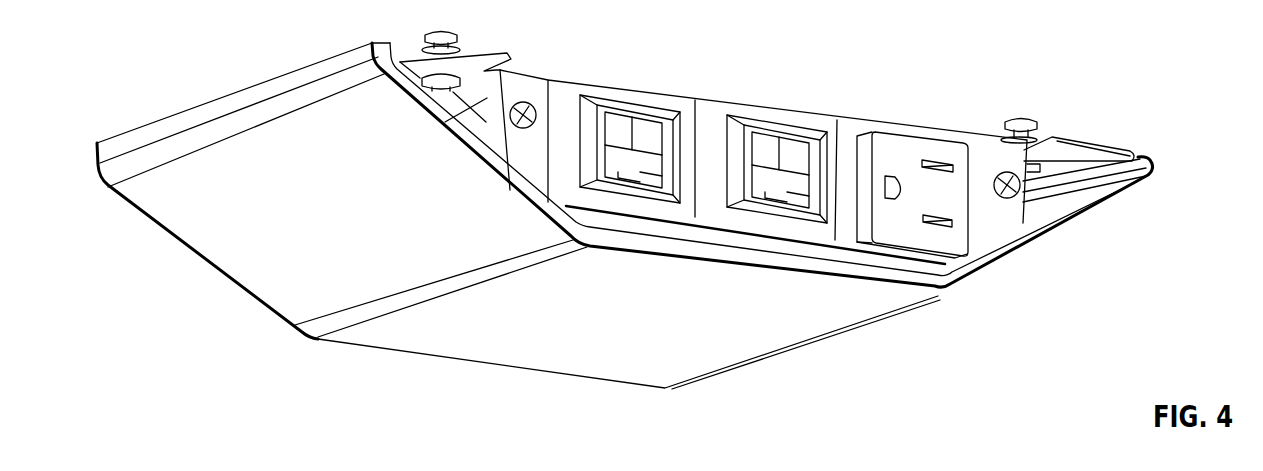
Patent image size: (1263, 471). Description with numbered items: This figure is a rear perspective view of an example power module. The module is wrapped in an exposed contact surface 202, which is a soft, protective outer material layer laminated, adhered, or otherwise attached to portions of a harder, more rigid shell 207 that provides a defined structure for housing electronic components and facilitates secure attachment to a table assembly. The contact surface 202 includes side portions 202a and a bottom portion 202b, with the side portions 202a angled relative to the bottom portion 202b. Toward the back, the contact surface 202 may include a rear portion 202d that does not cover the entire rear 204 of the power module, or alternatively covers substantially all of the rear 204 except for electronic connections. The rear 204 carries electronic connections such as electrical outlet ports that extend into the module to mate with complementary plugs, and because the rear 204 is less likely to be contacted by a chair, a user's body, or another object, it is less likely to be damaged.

The contact surface 202 is at (387, 45).
The side portions 202a is at (240, 252).
The bottom portion 202b is at (487, 350).
The rear portion 202d is at (1152, 167).
The rear 204 is at (850, 127).
The shell 207 is at (1136, 157).